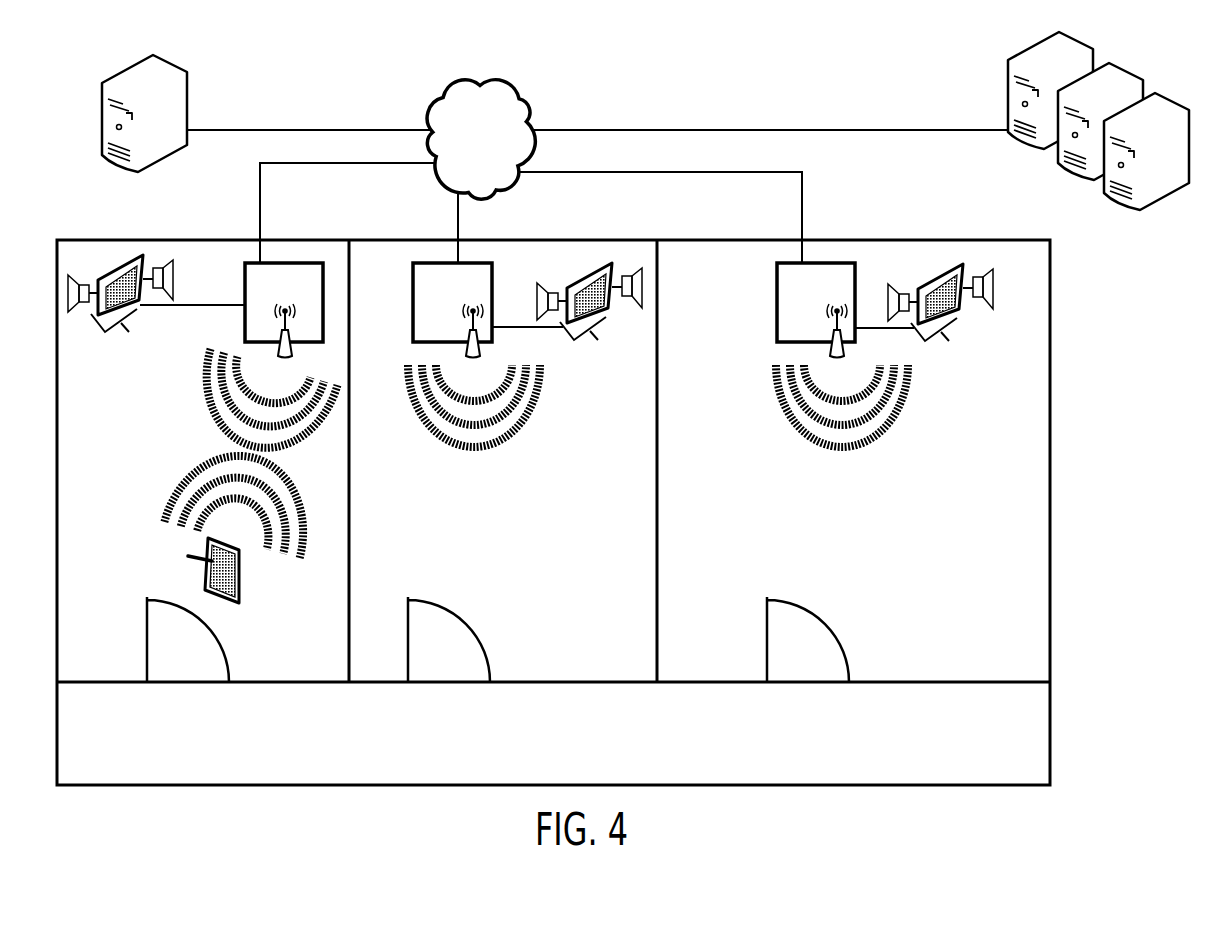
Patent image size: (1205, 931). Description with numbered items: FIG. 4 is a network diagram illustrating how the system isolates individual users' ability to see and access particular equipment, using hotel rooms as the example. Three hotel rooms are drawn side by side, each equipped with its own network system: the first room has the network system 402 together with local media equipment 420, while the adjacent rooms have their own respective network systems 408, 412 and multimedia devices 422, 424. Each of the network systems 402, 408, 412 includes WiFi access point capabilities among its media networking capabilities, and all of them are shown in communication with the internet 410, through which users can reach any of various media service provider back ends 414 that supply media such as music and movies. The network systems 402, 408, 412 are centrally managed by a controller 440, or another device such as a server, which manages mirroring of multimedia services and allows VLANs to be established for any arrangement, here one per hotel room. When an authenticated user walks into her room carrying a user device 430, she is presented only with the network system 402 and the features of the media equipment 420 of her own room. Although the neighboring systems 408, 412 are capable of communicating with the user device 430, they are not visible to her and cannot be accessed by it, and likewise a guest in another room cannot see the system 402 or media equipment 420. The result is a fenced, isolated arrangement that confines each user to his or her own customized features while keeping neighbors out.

The network system 402 is at (245, 283).
The network system 408 is at (413, 300).
The internet 410 is at (430, 105).
The network system 412 is at (777, 288).
The media service provider back ends 414 is at (1138, 207).
The local media equipment 420 is at (133, 309).
The multimedia device 422 is at (581, 335).
The multimedia device 424 is at (942, 328).
The user device 430 is at (238, 601).
The controller 440 is at (138, 172).